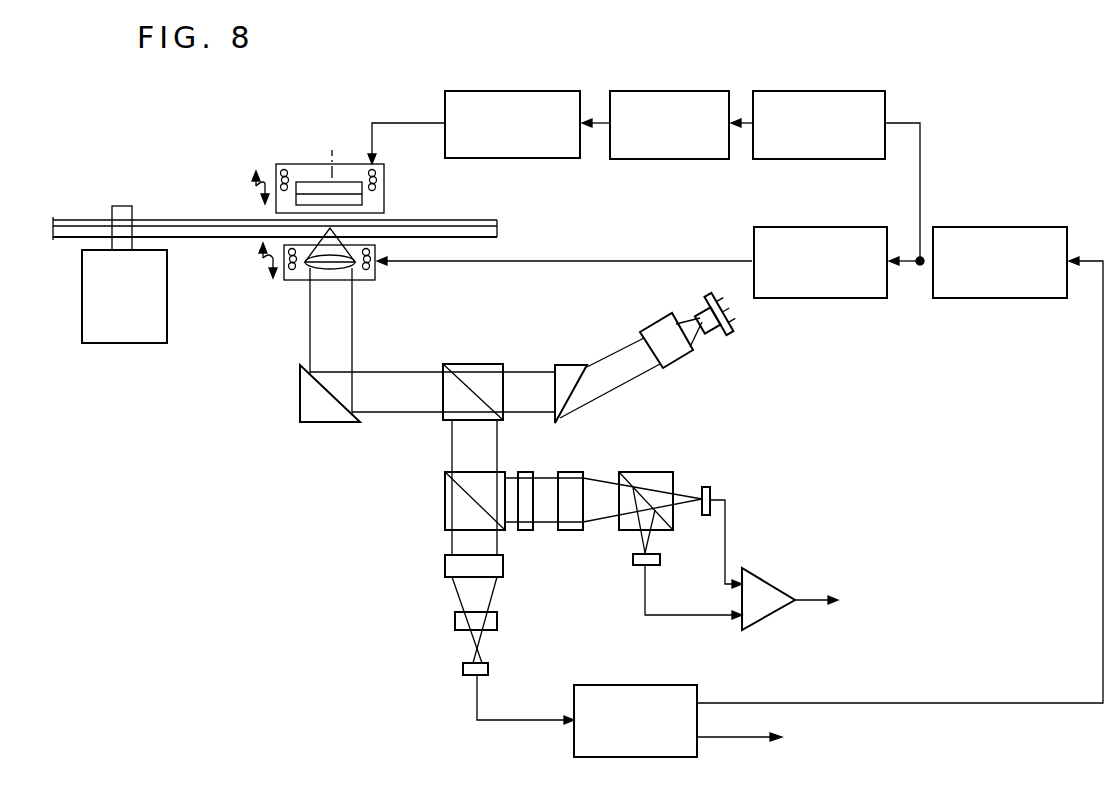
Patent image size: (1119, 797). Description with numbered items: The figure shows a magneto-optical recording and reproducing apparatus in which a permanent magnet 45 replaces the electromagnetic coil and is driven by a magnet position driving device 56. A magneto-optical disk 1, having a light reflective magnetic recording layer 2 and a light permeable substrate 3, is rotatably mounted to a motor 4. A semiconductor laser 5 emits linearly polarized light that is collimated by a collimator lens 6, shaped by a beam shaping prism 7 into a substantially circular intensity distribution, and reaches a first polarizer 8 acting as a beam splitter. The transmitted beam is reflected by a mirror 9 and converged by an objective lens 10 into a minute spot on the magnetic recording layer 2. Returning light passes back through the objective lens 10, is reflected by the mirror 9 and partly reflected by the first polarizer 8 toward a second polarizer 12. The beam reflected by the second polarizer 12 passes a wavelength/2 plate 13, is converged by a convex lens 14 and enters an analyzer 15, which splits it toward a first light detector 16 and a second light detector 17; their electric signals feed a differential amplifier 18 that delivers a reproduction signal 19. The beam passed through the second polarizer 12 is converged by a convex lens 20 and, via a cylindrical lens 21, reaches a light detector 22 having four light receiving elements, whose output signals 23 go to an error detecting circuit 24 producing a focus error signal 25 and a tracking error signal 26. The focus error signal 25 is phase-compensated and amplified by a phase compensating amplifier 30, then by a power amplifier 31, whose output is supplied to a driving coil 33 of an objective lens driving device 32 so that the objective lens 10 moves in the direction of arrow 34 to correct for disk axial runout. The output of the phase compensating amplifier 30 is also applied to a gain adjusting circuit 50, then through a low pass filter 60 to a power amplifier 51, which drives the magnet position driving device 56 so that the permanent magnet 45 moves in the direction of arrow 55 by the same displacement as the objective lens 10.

The magneto-optical disk 1 is at (187, 243).
The magnetic recording layer 2 is at (146, 218).
The light permeable substrate 3 is at (173, 225).
The motor 4 is at (103, 344).
The semiconductor laser 5 is at (698, 307).
The collimator lens 6 is at (643, 330).
The beam shaping prism 7 is at (565, 365).
The first polarizer 8 is at (472, 364).
The mirror 9 is at (300, 395).
The objective lens 10 is at (352, 278).
The second polarizer 12 is at (445, 515).
The wavelength/2 plate 13 is at (527, 472).
The convex lens 14 is at (575, 472).
The analyzer 15 is at (655, 472).
The first light detector 16 is at (712, 487).
The second light detector 17 is at (660, 560).
The differential amplifier 18 is at (778, 585).
The reproduction signal 19 is at (817, 600).
The convex lens 20 is at (445, 566).
The cylindrical lens 21 is at (455, 620).
The light detector 22 is at (463, 668).
The output signals 23 is at (539, 720).
The error detecting circuit 24 is at (642, 685).
The focus error signal 25 is at (757, 703).
The tracking error signal 26 is at (738, 740).
The phase compensating amplifier 30 is at (1017, 227).
The power amplifier 31 is at (850, 227).
The objective lens driving device 32 is at (320, 291).
The driving coil 33 is at (292, 282).
The arrow 34 is at (262, 259).
The permanent magnet 45 is at (362, 197).
The gain adjusting circuit 50 is at (850, 91).
The power amplifier 51 is at (547, 91).
The arrow 55 is at (251, 182).
The magnet position driving device 56 is at (354, 155).
The low pass filter 60 is at (702, 91).